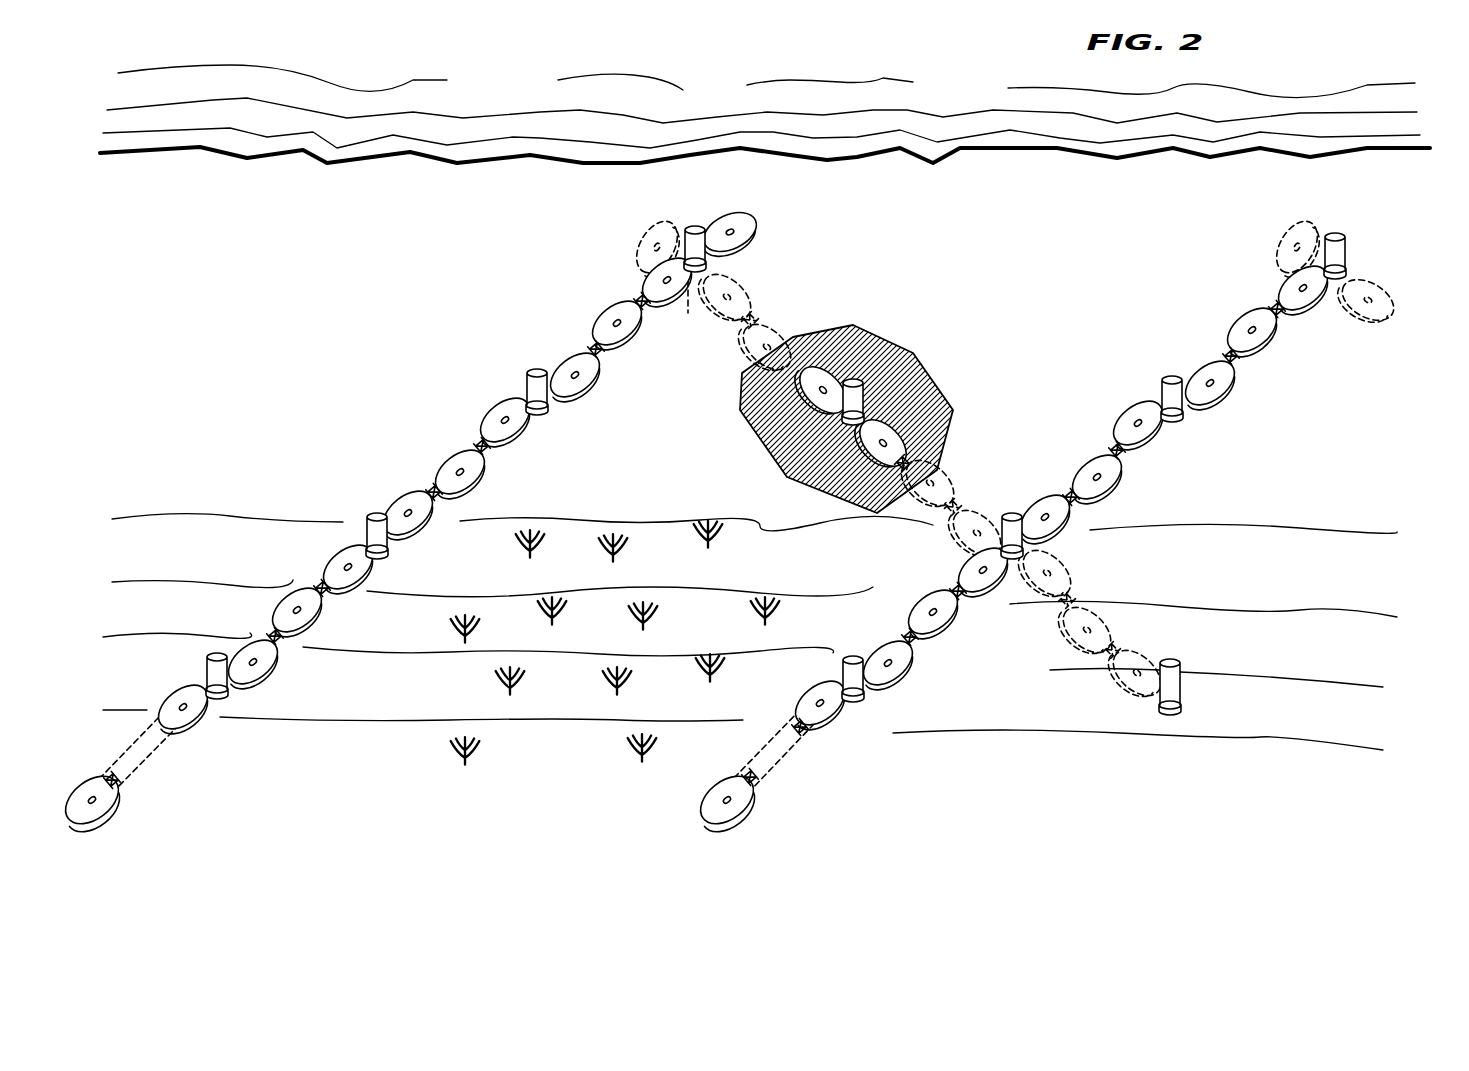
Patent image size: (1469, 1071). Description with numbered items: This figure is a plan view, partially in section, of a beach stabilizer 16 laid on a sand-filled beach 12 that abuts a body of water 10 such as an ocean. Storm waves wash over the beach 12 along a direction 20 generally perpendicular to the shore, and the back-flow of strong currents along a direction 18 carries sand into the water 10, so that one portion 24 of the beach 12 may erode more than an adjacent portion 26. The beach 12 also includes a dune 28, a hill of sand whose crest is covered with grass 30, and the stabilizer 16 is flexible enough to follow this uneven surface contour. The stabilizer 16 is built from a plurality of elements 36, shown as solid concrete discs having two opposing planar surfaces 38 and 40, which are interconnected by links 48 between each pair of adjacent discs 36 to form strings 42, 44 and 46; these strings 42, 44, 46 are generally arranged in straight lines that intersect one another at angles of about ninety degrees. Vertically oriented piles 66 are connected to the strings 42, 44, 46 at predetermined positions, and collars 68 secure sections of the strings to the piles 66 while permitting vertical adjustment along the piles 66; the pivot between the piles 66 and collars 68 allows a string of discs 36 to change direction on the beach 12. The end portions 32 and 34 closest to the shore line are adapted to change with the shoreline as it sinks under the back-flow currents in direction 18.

The body of water 10 is at (730, 73).
The beach 12 is at (1260, 574).
The beach stabilizer 16 is at (630, 250).
The direction 18 is at (472, 72).
The direction 20 is at (940, 52).
The portion of the beach 24 is at (233, 172).
The adjacent portion of the beach 26 is at (1162, 173).
The dune 28 is at (680, 690).
The grass 30 is at (607, 543).
The end portion 32 is at (838, 200).
The end portion 34 is at (1403, 228).
The elements 36 is at (752, 234).
The planar surface 38 is at (365, 545).
The planar surface 40 is at (318, 635).
The string 42 is at (370, 442).
The string 44 is at (896, 365).
The string 46 is at (1268, 398).
The links 48 is at (270, 630).
The piles 66 is at (695, 226).
The collars 68 is at (545, 406).